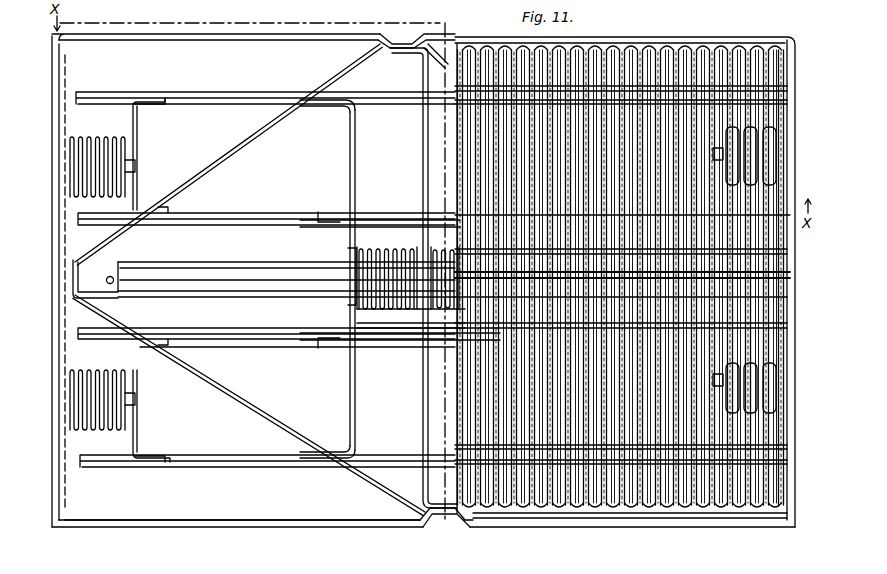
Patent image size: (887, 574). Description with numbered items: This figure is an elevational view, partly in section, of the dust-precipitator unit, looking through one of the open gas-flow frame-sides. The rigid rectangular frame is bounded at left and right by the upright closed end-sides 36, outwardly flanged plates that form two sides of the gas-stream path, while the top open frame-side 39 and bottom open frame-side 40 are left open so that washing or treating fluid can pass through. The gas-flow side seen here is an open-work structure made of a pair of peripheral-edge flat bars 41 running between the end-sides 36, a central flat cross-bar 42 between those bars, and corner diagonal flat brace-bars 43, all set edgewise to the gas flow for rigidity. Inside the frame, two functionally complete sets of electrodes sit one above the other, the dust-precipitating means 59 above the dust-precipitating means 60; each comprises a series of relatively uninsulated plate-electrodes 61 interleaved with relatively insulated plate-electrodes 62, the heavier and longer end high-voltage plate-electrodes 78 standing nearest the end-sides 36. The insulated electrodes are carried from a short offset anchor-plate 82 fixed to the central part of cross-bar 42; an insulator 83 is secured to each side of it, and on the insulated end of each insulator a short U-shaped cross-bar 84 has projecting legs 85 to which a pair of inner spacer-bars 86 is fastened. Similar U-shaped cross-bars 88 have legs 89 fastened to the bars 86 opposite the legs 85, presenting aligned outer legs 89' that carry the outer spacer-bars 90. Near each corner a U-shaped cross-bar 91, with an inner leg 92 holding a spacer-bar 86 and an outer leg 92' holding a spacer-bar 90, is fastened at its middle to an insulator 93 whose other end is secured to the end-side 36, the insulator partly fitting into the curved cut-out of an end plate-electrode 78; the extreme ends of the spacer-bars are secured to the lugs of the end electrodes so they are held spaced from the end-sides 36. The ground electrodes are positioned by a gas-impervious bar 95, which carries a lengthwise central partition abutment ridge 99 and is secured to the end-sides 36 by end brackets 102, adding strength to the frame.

The closed rigid end-side 36 is at (52, 240).
The top open frame-side 39 is at (434, 38).
The bottom open frame-side 40 is at (440, 524).
The peripheral-edge flat bar 41 is at (260, 38).
The central flat cross-bar 42 is at (431, 392).
The corner diagonal flat brace-bar 43 is at (246, 158).
The dust-precipitating means 59 is at (601, 172).
The dust-precipitating means 60 is at (615, 399).
The relatively uninsulated plate-electrode 61 is at (750, 82).
The relatively insulated plate-electrode 62 is at (746, 48).
The end high-voltage plate-electrode 78 is at (784, 108).
The offset anchor-plate 82 is at (412, 310).
The insulator 83 is at (388, 249).
The U-shaped cross-bar 84 is at (348, 248).
The projecting leg 85 is at (320, 226).
The inner spacer-bar 86 is at (290, 212).
The U-shaped cross-bar 88 is at (358, 166).
The leg 89 is at (328, 282).
The outer leg 89' is at (327, 295).
The outer spacer-bar 90 is at (236, 93).
The U-shaped cross-bar 91 is at (138, 126).
The inner leg 92 is at (187, 277).
The outer leg 92' is at (163, 280).
The insulator 93 is at (100, 140).
The bar 95 is at (254, 257).
The central partition abutment ridge 99 is at (790, 274).
The end bracket 102 is at (106, 268).